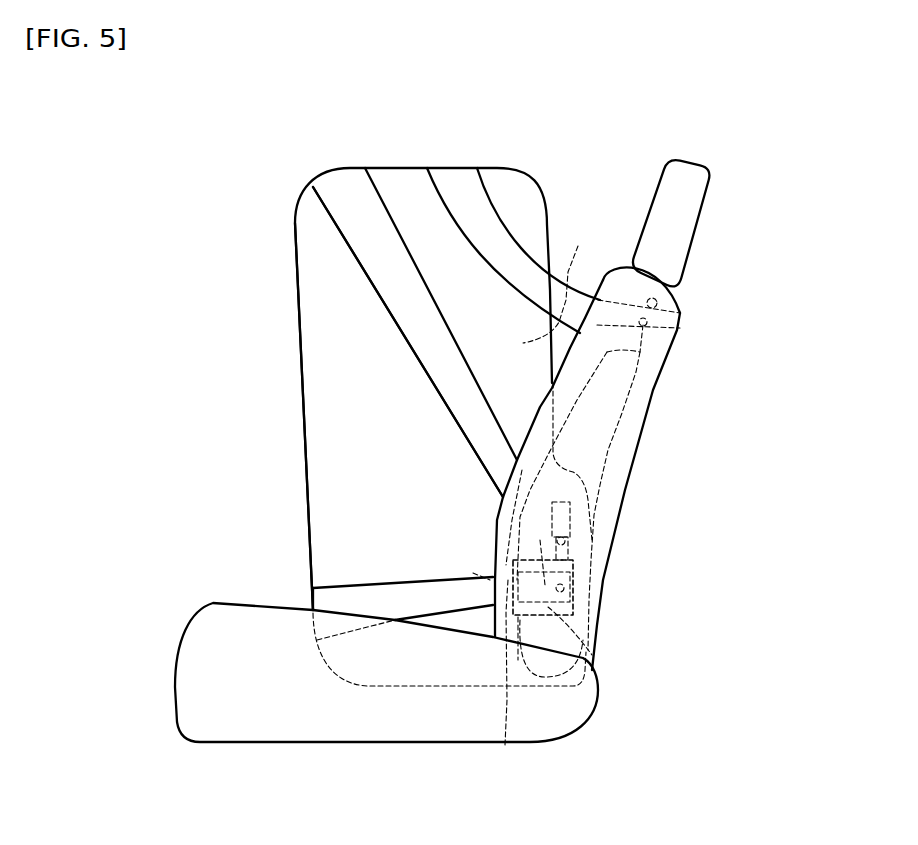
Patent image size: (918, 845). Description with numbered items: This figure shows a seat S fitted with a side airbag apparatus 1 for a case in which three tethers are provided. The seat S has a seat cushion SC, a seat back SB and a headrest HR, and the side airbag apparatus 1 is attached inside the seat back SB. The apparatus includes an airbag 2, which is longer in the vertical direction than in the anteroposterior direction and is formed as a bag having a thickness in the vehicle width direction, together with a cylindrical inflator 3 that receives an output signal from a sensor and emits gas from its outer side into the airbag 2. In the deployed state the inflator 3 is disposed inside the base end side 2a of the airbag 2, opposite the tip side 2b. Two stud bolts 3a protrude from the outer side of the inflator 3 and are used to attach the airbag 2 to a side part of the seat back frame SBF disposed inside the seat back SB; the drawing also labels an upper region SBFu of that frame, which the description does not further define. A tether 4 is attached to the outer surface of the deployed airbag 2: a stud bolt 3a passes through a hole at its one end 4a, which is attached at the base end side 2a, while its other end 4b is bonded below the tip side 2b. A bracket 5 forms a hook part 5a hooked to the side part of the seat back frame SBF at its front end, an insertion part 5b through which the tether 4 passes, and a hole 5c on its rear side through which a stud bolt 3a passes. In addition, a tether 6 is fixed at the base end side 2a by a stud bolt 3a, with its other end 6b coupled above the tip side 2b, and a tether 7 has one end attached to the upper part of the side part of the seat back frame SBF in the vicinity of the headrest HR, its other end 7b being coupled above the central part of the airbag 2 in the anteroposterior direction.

The side airbag apparatus 1 is at (544, 174).
The airbag 2 is at (402, 178).
The base end side 2a is at (559, 280).
The tip side 2b is at (308, 370).
The inflator 3 is at (570, 517).
The stud bolts 3a is at (593, 552).
The tether 4 is at (407, 587).
The one end 4a is at (598, 643).
The other end 4b is at (302, 588).
The bracket 5 is at (603, 588).
The hook part 5a is at (504, 745).
The insertion part 5b is at (473, 573).
The hole 5c is at (600, 613).
The tether 6 is at (417, 338).
The other end 6b is at (338, 182).
The tether 7 is at (493, 255).
The other end 7b is at (458, 175).
The seat S is at (496, 479).
The seat back SB is at (663, 324).
The seat cushion SC is at (305, 728).
The headrest HR is at (692, 208).
The seat back frame SBF is at (610, 398).
The upper frame of seat back frame SBFu is at (688, 311).